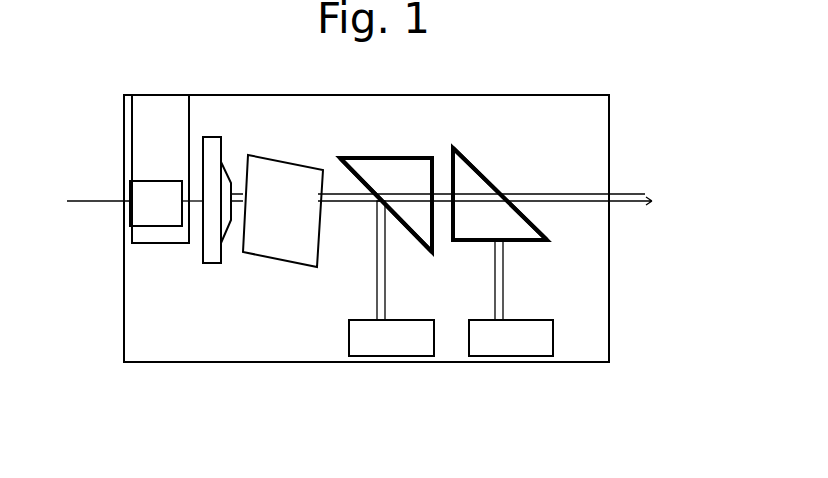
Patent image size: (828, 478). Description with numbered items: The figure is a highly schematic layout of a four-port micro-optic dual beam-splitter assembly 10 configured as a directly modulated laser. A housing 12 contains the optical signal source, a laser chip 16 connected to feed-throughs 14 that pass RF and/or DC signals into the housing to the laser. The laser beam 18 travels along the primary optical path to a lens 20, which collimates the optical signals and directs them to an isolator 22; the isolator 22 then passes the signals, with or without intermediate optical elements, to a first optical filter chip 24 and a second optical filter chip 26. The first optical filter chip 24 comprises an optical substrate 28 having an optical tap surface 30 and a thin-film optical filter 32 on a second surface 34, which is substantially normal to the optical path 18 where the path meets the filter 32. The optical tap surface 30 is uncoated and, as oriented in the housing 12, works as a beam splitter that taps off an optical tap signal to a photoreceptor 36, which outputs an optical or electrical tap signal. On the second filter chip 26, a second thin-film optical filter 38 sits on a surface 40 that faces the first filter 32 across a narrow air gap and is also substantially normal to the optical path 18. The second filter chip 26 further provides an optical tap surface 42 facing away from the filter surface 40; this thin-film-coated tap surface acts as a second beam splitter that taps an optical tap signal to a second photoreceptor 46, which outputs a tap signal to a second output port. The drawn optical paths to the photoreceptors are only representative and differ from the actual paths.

The micro-optic dual beam-splitter assembly 10 is at (630, 146).
The housing 12 is at (200, 362).
The feed-throughs 14 is at (83, 203).
The laser chip 16 is at (163, 226).
The laser beam 18 is at (197, 197).
The lens 20 is at (212, 263).
The isolator 22 is at (272, 155).
The first optical filter chip 24 is at (418, 212).
The second optical filter chip 26 is at (545, 242).
The optical substrate 28 is at (400, 222).
The optical tap surface 30 is at (341, 160).
The thin-film optical filter 32 is at (433, 158).
The second surface 34 is at (428, 240).
The photoreceptor 36 is at (412, 345).
The second thin-film optical filter 38 is at (508, 240).
The surface 40 is at (447, 152).
The optical tap surface 42 is at (480, 178).
The second photoreceptor 46 is at (545, 345).